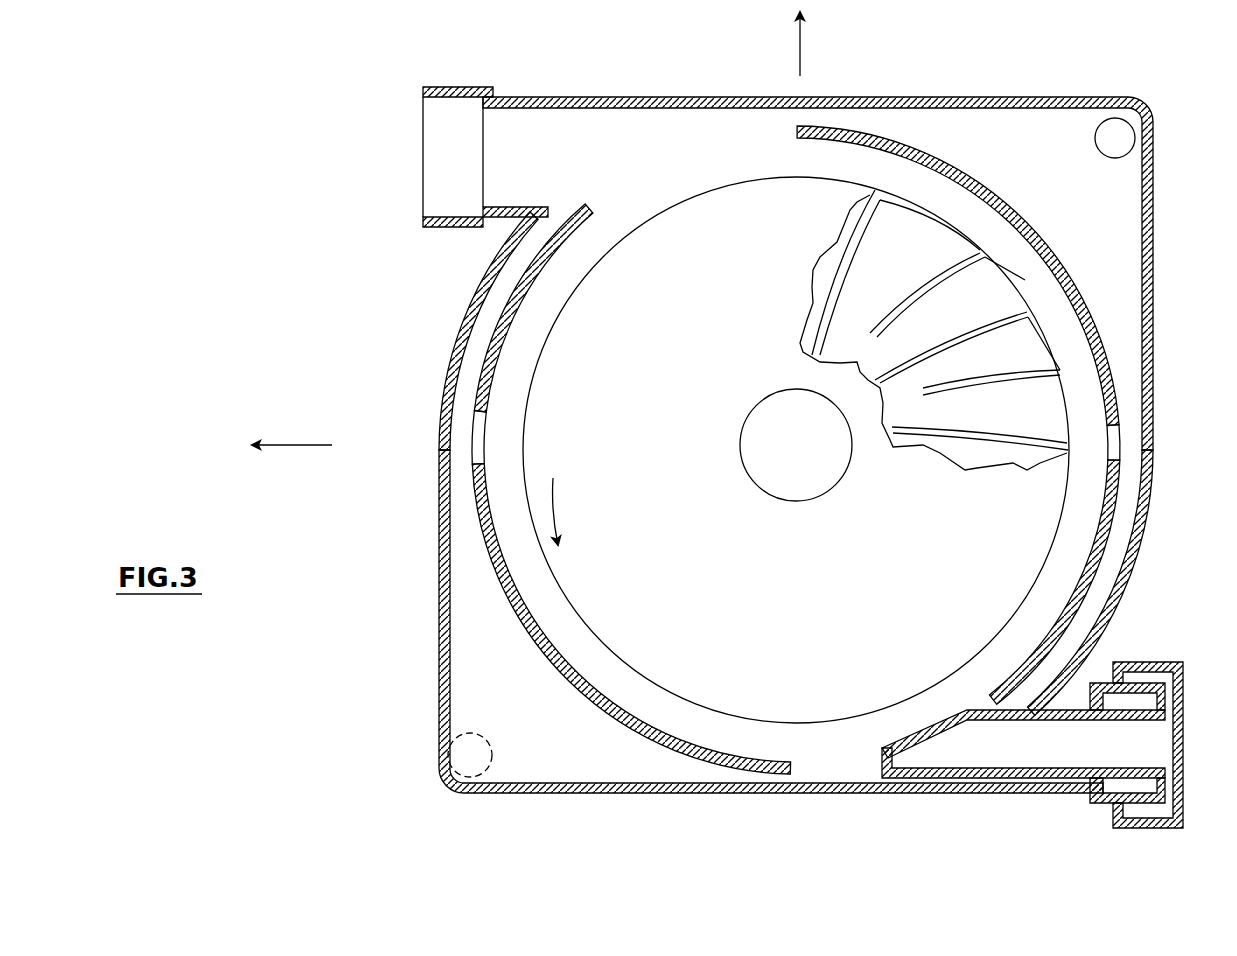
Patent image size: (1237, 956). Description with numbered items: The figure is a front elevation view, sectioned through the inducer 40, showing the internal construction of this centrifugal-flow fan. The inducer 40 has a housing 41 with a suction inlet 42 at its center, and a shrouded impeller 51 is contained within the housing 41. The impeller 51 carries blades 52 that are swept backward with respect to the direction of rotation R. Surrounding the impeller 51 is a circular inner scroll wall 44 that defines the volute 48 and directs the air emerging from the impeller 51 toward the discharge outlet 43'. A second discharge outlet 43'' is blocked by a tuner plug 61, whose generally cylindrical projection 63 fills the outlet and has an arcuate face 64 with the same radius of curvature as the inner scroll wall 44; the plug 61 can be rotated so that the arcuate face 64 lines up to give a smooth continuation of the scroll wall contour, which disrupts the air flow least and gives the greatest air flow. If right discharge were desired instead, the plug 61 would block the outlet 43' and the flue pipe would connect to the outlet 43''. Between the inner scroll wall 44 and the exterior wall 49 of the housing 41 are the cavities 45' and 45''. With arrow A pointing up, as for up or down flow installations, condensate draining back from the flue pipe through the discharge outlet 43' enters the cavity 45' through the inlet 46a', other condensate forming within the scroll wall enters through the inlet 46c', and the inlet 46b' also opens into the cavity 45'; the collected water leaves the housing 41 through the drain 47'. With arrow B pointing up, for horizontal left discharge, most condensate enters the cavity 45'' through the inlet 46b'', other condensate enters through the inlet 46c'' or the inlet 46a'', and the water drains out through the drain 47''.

The inducer 40 is at (968, 64).
The housing 41 is at (620, 97).
The suction inlet 42 is at (813, 458).
The discharge outlet 43' is at (418, 157).
The discharge outlet 43'' is at (1101, 751).
The inner scroll wall 44 is at (1075, 290).
The cavity 45' is at (500, 690).
The cavity 45'' is at (1067, 190).
The inlet 46a' is at (568, 286).
The inlet 46b' is at (430, 420).
The inlet 46c' is at (668, 622).
The inlet 46a'' is at (1001, 582).
The inlet 46b'' is at (1168, 443).
The inlet 46c'' is at (906, 274).
The condensate drain outlet 47' is at (422, 758).
The condensate drain outlet 47'' is at (1165, 138).
The volute 48 is at (697, 737).
The exterior wall 49 is at (975, 97).
The shrouded impeller 51 is at (809, 696).
The blades 52 is at (905, 200).
The tuner plug 61 is at (1150, 661).
The projection 63 is at (1087, 756).
The arcuate face 64 is at (947, 717).